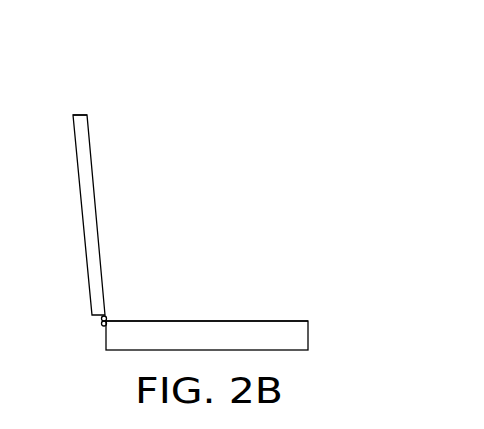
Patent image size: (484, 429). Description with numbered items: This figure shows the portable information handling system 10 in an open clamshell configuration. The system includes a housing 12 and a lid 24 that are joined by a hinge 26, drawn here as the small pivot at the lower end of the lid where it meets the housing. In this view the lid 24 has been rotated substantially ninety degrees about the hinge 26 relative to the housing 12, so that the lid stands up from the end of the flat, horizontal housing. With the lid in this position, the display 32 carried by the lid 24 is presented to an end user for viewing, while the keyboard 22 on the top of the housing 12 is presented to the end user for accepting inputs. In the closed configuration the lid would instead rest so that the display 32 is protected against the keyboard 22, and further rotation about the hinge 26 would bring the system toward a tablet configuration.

The portable information handling system 10 is at (259, 162).
The housing 12 is at (300, 337).
The keyboard 22 is at (216, 320).
The lid 24 is at (81, 117).
The hinge 26 is at (100, 326).
The display 32 is at (97, 208).